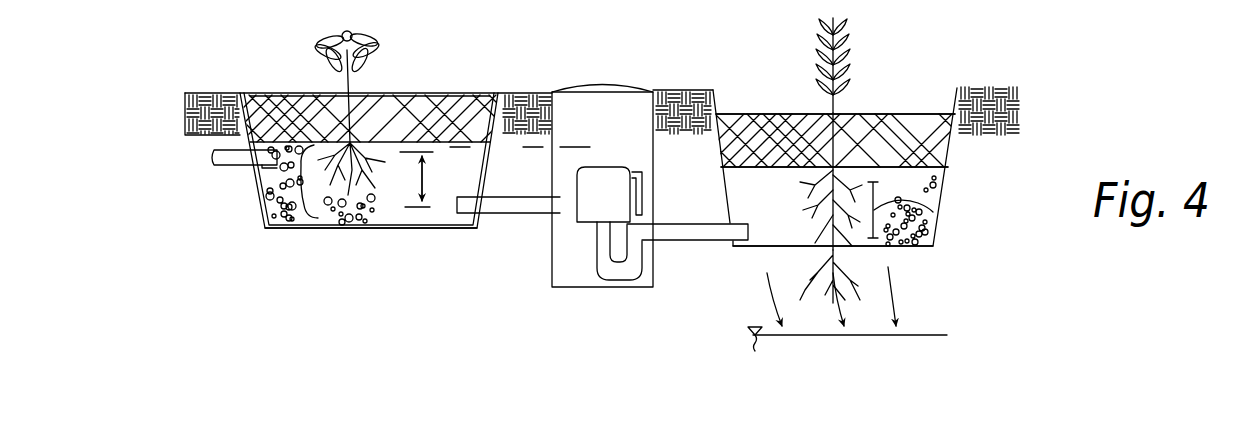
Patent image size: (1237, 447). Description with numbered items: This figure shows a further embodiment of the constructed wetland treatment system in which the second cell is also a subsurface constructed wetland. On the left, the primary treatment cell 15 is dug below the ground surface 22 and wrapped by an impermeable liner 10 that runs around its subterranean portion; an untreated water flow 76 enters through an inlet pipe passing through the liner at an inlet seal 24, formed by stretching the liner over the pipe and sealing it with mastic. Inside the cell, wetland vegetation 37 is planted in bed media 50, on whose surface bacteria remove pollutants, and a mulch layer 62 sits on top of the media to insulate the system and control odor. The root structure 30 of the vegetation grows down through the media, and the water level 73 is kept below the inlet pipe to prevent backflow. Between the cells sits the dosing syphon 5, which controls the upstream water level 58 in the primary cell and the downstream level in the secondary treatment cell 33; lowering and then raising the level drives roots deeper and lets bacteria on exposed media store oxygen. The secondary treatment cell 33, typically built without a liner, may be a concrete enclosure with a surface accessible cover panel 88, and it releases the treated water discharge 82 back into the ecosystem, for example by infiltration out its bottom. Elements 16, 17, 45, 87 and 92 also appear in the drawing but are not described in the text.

The dosing syphon 5 is at (609, 223).
The impermeable liner 10 is at (319, 236).
The primary treatment cell 15 is at (355, 237).
The drainage gravel layer 16 is at (403, 184).
The water table 17 is at (864, 337).
The ground surface 22 is at (207, 92).
The inlet seal 24 is at (260, 167).
The root structure 30 is at (303, 220).
The secondary treatment cell 33 is at (876, 104).
The wetland vegetation 37 is at (383, 28).
The open bottom 45 is at (742, 255).
The bed media 50 is at (294, 138).
The upstream water level 58 is at (414, 94).
The mulch layer 62 is at (256, 98).
The water level 73 is at (452, 91).
The untreated water flow 76 is at (203, 158).
The treated water discharge 82 is at (932, 250).
The pump chamber 87 is at (618, 295).
The surface accessible cover panel 88 is at (600, 78).
The outlet pipe 92 is at (666, 215).